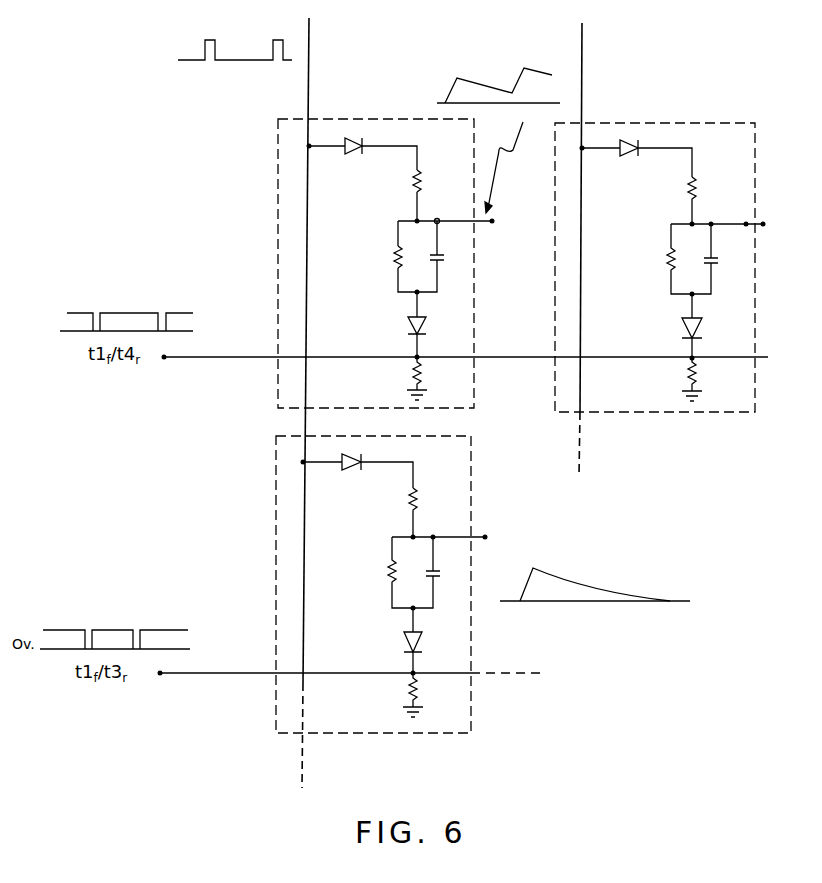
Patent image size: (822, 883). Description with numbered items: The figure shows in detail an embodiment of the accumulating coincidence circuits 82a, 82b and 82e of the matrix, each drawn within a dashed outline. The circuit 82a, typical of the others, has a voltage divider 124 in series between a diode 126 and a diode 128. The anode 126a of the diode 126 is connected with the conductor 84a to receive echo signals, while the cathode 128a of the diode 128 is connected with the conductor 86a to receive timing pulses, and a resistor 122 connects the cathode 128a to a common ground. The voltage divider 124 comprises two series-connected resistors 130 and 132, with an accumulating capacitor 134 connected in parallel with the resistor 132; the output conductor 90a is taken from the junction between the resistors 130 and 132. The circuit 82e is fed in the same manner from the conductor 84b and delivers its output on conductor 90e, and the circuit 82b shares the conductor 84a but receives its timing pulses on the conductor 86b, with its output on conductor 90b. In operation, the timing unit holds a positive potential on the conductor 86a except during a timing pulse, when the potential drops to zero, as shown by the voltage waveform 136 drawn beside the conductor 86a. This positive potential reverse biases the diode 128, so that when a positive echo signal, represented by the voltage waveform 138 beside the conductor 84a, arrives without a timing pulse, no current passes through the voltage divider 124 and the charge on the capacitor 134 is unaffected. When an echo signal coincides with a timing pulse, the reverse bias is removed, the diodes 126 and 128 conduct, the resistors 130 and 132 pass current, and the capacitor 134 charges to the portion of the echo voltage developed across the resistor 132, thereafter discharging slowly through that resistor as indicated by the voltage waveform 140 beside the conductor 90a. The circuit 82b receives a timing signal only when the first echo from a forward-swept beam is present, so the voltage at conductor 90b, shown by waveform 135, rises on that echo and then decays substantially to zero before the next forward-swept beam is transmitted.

The voltage waveform 138 is at (212, 40).
The conductor 84a is at (308, 84).
The conductor 84b is at (583, 97).
The anode 126a is at (325, 146).
The diode 126 is at (352, 138).
The resistor 130 is at (422, 182).
The voltage waveform 140 is at (470, 78).
The accumulating coincidence circuit 82a is at (277, 195).
The accumulating coincidence circuit 82b is at (275, 530).
The accumulating coincidence circuit 82e is at (688, 122).
The voltage divider 124 is at (394, 220).
The accumulating capacitor 134 is at (470, 238).
The resistor 132 is at (396, 258).
The diode 128 is at (415, 318).
The cathode 128a is at (415, 345).
The resistor 122 is at (422, 380).
The output conductor 90a is at (492, 222).
The output conductor 90b is at (485, 536).
The output conductor 90e is at (763, 222).
The voltage waveform 136 is at (90, 313).
The conductor 86a is at (242, 356).
The conductor 86b is at (243, 673).
The waveform 135 is at (560, 572).